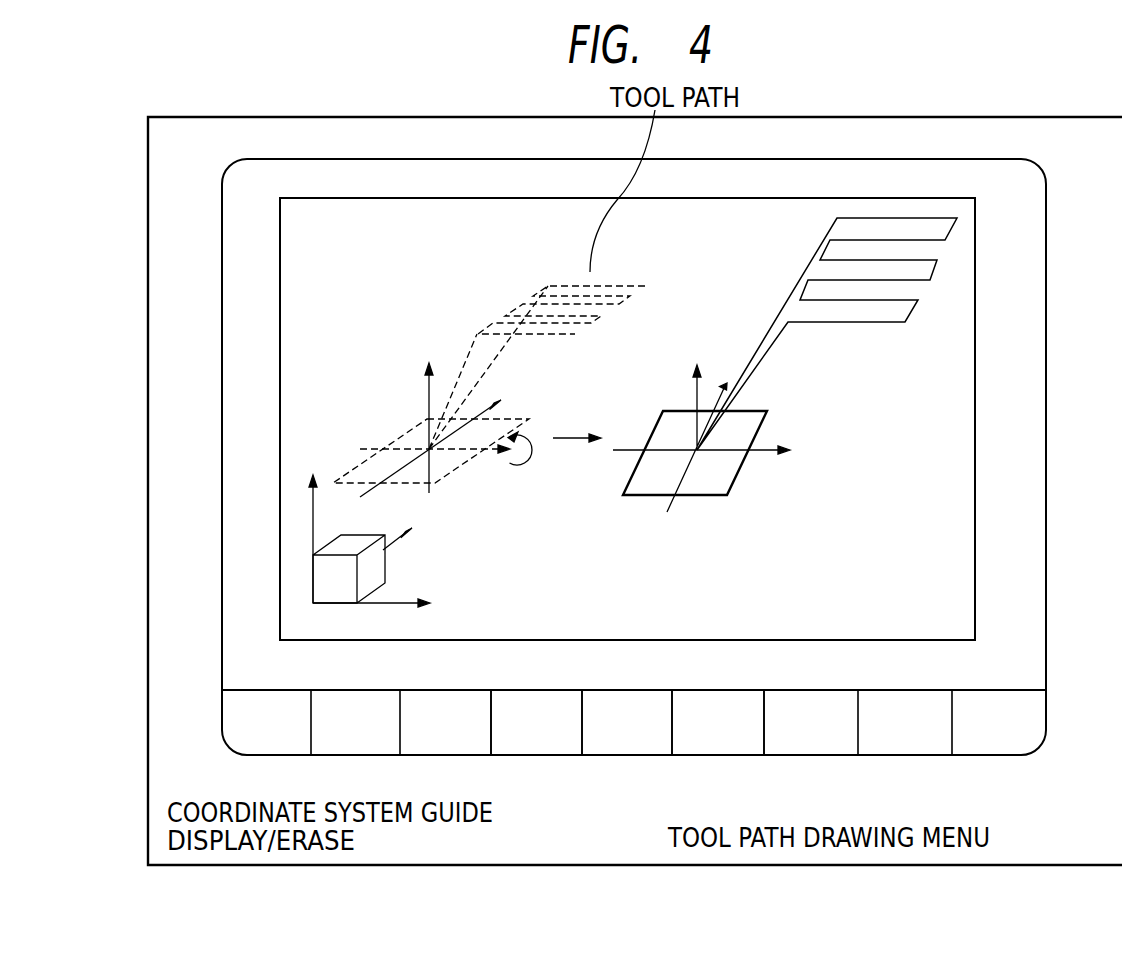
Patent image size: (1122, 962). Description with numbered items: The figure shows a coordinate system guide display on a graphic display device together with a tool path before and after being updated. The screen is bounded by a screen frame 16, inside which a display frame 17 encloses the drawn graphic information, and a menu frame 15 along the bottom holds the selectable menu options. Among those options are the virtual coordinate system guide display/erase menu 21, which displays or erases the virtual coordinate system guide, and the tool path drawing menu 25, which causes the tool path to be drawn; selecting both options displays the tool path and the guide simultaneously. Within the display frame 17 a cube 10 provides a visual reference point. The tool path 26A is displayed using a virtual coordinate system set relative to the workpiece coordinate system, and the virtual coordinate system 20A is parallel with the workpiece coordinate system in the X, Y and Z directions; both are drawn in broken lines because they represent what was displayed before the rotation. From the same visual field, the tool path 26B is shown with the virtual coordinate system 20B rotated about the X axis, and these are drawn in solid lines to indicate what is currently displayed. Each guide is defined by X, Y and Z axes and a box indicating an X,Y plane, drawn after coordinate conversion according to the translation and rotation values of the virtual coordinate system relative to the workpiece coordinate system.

The cube 10 is at (333, 598).
The menu frame 15 is at (1002, 752).
The screen frame 16 is at (1046, 610).
The display frame 17 is at (887, 643).
The virtual coordinate system 20A is at (457, 470).
The virtual coordinate system 20B is at (728, 497).
The virtual coordinate system guide display/erase menu 21 is at (535, 750).
The tool path drawing menu 25 is at (705, 745).
The tool path 26A is at (610, 280).
The tool path 26B is at (865, 323).